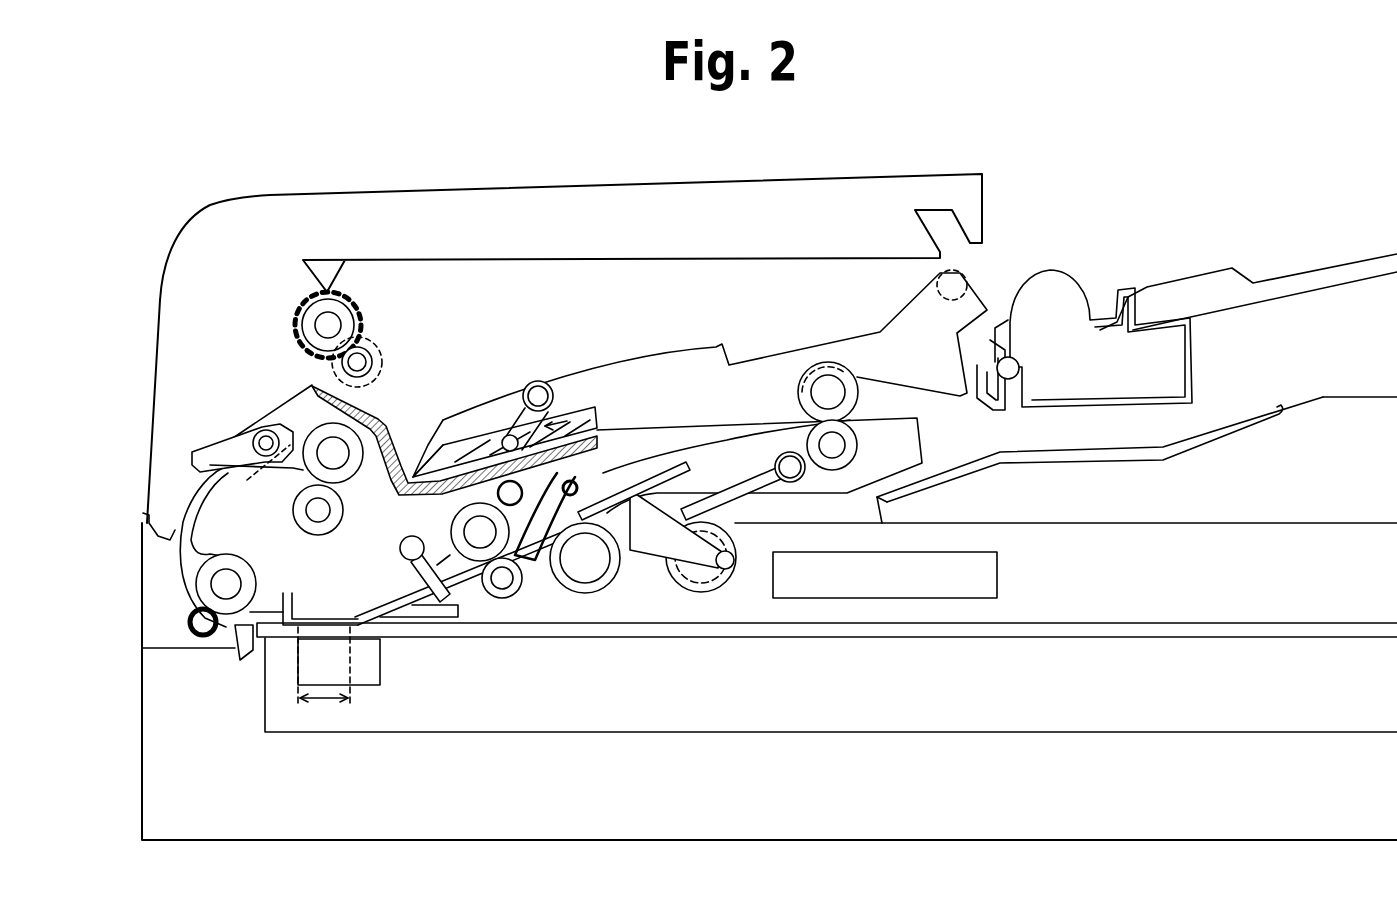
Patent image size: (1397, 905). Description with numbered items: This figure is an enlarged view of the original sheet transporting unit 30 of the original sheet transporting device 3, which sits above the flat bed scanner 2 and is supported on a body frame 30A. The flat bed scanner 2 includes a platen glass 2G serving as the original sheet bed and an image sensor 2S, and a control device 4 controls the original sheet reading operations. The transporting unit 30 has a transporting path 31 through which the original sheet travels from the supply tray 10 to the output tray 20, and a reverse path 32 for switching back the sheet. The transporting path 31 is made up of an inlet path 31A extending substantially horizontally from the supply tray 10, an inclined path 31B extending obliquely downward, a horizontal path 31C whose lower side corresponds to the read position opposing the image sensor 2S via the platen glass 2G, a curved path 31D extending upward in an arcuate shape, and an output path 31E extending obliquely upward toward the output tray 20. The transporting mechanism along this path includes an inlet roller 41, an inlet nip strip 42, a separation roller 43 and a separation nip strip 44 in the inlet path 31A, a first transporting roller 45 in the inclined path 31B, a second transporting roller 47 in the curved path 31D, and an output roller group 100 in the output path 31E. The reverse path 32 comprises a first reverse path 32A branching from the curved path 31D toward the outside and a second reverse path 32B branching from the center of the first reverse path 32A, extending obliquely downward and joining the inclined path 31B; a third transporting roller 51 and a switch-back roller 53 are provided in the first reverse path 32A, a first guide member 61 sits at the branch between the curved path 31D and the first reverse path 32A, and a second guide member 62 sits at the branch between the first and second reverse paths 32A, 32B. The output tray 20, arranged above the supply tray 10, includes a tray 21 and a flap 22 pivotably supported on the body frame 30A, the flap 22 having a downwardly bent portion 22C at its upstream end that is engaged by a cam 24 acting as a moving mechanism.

The flat bed scanner 2 is at (133, 715).
The platen glass 2G is at (793, 638).
The image sensor 2S is at (368, 688).
The original sheet transporting device 3 is at (227, 135).
The control device 4 is at (903, 600).
The supply tray 10 is at (1342, 390).
The output tray 20 is at (1268, 235).
The tray 21 is at (1172, 257).
The flap 22 is at (763, 357).
The bent portion 22C is at (448, 418).
The cam 24 is at (578, 410).
The original sheet transporting unit 30 is at (462, 172).
The body frame 30A is at (157, 310).
The transporting path 31 is at (262, 373).
The inlet path 31A is at (838, 517).
The inclined path 31B is at (465, 578).
The horizontal path 31C is at (330, 632).
The curved path 31D is at (187, 507).
The output path 31E is at (257, 410).
The reverse path 32 is at (648, 420).
The first reverse path 32A is at (398, 438).
The second reverse path 32B is at (538, 485).
The inlet roller 41 is at (710, 590).
The inlet nip strip 42 is at (753, 480).
The separation roller 43 is at (613, 573).
The separation nip strip 44 is at (677, 468).
The first transporting roller 45 is at (517, 585).
The second transporting roller 47 is at (190, 620).
The third transporting roller 51 is at (297, 503).
The switch-back roller 53 is at (855, 415).
The first guide member 61 is at (200, 447).
The second guide member 62 is at (540, 506).
The output roller group 100 is at (347, 288).